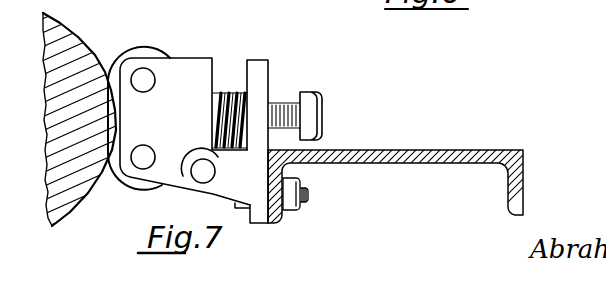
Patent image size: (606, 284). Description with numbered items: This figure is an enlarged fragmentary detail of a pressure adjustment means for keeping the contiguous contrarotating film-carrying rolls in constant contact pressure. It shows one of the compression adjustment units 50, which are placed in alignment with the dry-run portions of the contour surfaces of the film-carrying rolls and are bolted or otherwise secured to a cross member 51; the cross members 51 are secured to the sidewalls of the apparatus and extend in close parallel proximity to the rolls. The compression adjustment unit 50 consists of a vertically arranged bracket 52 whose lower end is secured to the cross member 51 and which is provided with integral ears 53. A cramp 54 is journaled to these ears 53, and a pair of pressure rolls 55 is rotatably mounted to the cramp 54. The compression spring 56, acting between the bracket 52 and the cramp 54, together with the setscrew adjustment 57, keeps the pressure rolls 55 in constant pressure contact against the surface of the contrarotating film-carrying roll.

The compression adjustment unit 50 is at (203, 52).
The cross member 51 is at (523, 170).
The bracket 52 is at (261, 65).
The integral ears 53 is at (253, 192).
The cramp 54 is at (190, 87).
The pressure rolls 55 is at (129, 54).
The compression spring 56 is at (244, 93).
The setscrew adjustment 57 is at (300, 118).